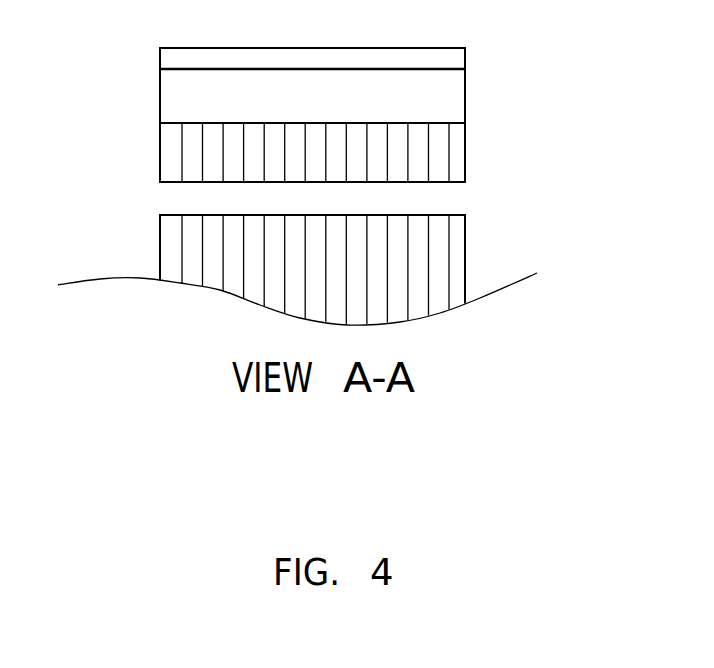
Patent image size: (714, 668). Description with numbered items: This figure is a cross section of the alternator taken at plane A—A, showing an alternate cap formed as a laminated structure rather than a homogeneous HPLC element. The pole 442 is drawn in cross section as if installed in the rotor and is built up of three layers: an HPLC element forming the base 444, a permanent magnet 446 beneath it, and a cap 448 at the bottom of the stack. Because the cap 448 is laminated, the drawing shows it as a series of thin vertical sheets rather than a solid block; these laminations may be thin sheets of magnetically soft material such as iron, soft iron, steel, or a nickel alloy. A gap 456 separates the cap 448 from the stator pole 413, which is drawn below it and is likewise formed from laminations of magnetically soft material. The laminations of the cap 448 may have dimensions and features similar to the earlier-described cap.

The pole 442 is at (327, 112).
The base 444 is at (160, 61).
The permanent magnet 446 is at (160, 100).
The cap 448 is at (160, 152).
The gap 456 is at (466, 199).
The stator pole 413 is at (160, 243).